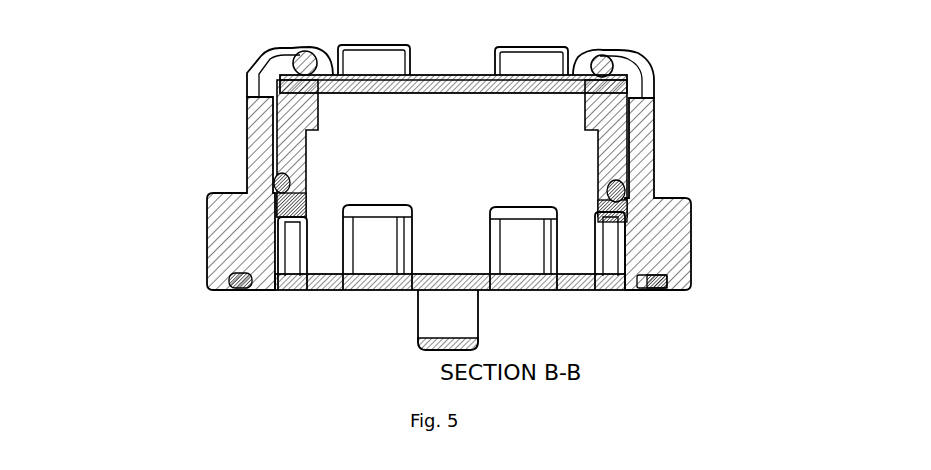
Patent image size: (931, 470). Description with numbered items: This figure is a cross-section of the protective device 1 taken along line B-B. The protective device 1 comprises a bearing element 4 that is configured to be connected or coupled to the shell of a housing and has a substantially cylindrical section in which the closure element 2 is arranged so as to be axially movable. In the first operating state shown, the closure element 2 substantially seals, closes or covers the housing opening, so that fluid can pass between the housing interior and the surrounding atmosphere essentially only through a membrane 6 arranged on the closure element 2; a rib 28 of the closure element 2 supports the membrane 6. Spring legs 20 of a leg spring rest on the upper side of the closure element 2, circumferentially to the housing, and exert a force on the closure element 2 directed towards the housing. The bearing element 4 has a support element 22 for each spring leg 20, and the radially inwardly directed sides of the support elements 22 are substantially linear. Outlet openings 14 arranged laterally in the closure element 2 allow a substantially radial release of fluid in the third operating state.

The protective device 1 is at (713, 114).
The closure element 2 is at (262, 85).
The bearing element 4 is at (247, 150).
The membrane 6 is at (426, 81).
The outlet openings 14 is at (365, 270).
The spring legs 20 is at (307, 50).
The support elements 22 is at (275, 47).
The rib 28 is at (448, 75).